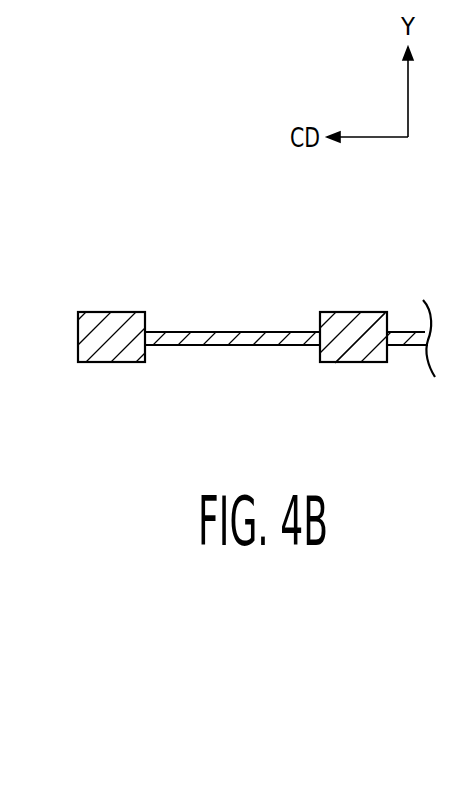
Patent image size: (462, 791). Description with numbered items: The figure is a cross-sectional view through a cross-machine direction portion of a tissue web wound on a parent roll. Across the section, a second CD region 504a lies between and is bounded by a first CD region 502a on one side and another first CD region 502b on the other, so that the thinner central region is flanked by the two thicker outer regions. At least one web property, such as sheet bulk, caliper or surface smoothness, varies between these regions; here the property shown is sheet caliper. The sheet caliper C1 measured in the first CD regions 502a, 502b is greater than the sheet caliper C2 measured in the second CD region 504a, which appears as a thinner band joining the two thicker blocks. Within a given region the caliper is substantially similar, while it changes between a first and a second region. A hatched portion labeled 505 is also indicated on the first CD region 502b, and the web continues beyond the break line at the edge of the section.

The first CD region 502a is at (77, 262).
The second CD region 504a is at (318, 262).
The first CD region 502b is at (318, 262).
The conductive trace 505 is at (358, 348).
The sheet caliper C1 is at (112, 272).
The sheet caliper C2 is at (237, 272).